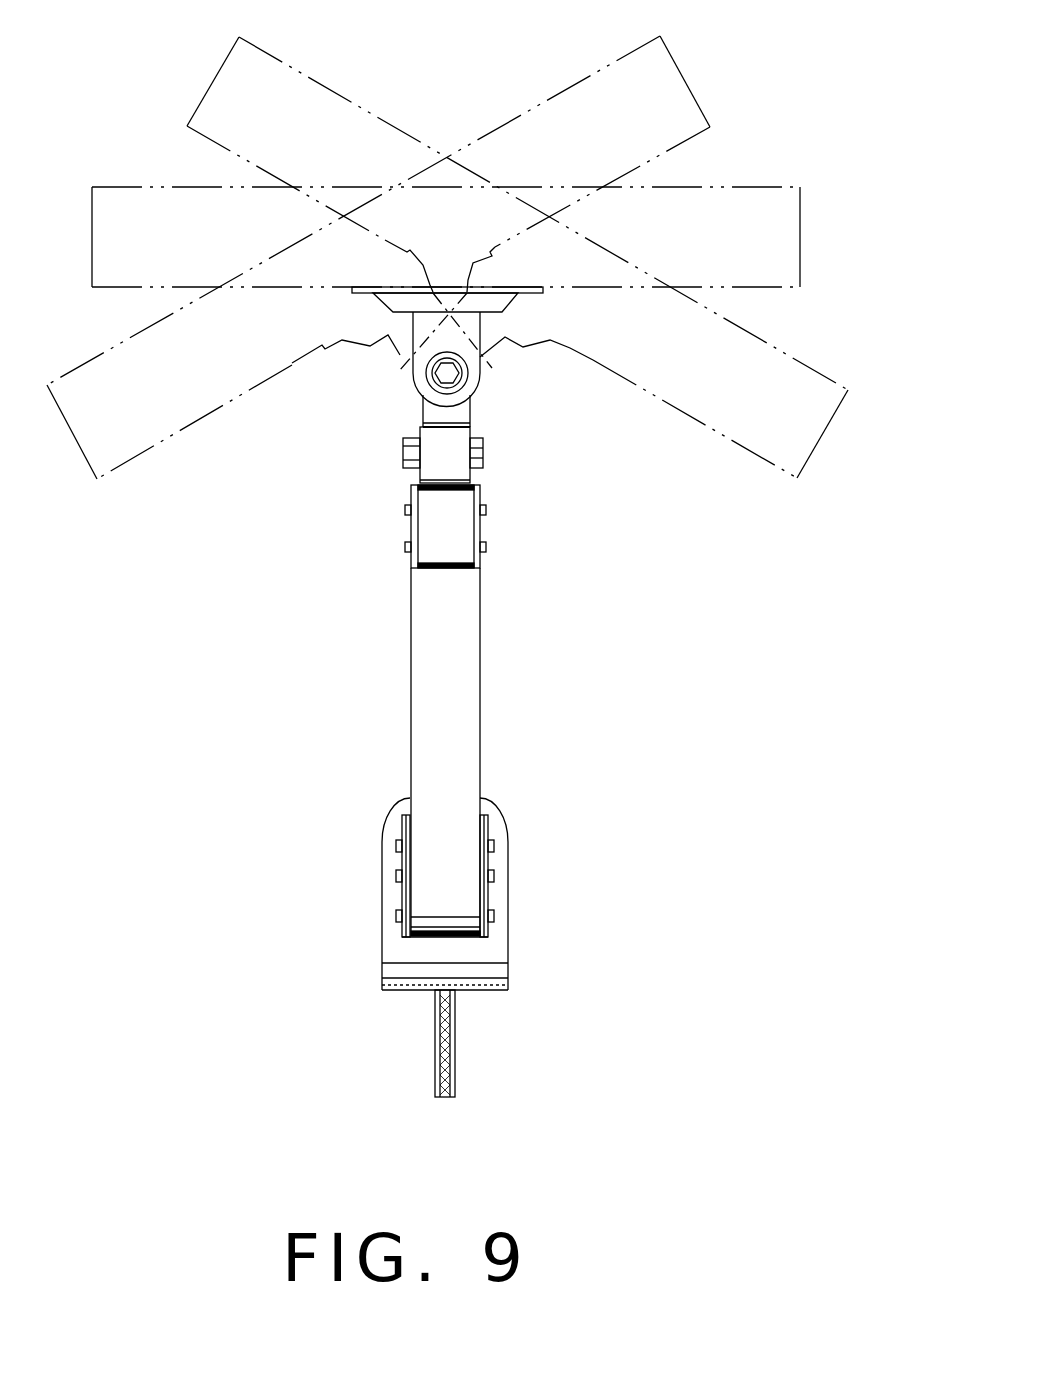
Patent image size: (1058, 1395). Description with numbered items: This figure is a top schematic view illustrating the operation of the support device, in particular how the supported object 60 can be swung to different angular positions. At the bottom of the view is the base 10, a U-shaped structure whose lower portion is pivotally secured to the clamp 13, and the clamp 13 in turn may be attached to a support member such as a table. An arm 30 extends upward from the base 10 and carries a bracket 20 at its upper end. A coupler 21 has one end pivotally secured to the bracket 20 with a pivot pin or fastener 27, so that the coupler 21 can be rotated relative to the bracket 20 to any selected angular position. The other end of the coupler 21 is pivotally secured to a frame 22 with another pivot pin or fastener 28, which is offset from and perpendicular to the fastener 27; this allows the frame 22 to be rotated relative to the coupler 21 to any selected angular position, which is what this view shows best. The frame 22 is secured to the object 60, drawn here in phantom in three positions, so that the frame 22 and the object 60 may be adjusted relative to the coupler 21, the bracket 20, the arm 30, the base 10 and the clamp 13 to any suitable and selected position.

The object 60 is at (688, 80).
The frame 22 is at (505, 306).
The fastener 28 is at (446, 373).
The coupler 21 is at (458, 440).
The fastener 27 is at (403, 457).
The bracket 20 is at (460, 520).
The arm 30 is at (460, 647).
The clamp 13 is at (507, 892).
The base 10 is at (400, 892).